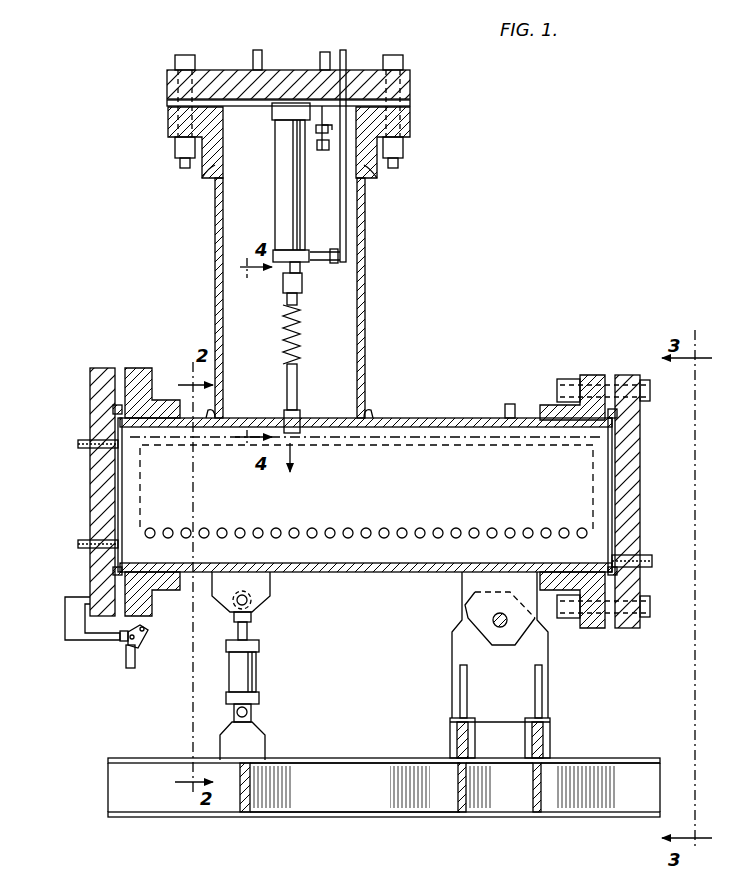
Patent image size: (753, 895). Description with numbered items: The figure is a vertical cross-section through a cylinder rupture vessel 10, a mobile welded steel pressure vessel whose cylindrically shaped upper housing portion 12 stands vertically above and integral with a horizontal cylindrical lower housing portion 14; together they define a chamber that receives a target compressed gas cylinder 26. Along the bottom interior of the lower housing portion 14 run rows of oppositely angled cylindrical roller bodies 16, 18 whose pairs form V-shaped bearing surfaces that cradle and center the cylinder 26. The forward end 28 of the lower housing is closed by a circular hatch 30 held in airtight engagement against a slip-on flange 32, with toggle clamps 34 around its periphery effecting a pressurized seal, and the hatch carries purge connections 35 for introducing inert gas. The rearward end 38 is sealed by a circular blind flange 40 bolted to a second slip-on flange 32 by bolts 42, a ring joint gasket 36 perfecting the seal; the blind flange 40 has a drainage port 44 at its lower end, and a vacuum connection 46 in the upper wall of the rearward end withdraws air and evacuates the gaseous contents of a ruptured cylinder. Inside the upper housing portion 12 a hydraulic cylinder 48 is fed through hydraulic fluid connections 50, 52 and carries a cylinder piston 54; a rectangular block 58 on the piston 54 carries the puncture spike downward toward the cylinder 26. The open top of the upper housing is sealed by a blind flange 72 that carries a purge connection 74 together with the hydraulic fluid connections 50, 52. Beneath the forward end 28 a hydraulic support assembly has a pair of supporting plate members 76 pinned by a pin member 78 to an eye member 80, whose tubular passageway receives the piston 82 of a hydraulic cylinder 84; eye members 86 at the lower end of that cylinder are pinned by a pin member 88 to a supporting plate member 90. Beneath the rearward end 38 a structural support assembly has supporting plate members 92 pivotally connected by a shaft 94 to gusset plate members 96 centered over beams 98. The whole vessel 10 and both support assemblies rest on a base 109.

The cylinder rupture vessel 10 is at (404, 298).
The upper housing portion 12 is at (215, 252).
The lower housing portion 14 is at (426, 418).
The cylindrical roller body 16 is at (242, 527).
The cylindrical roller body 18 is at (270, 565).
The target compressed gas cylinder 26 is at (512, 535).
The forward end 28 is at (120, 496).
The circular hatch 30 is at (90, 386).
The slip-on flange 32 is at (140, 368).
The toggle clamp 34 is at (65, 622).
The purge connection 35 is at (78, 444).
The ring joint gasket 36 is at (113, 409).
The rearward end 38 is at (600, 502).
The circular blind flange 40 is at (640, 458).
The bolt 42 is at (650, 390).
The drainage port 44 is at (648, 562).
The vacuum connection 46 is at (509, 404).
The hydraulic cylinder 48 is at (275, 222).
The hydraulic fluid connection 50 is at (325, 52).
The hydraulic fluid connection 52 is at (346, 56).
The cylinder piston 54 is at (302, 273).
The rectangular block 58 is at (298, 296).
The blind flange 72 is at (284, 70).
The purge connection 74 is at (257, 50).
The supporting plate member 76 is at (262, 580).
The pin member 78 is at (233, 601).
The eye member 80 is at (251, 617).
The piston 82 is at (247, 634).
The hydraulic cylinder 84 is at (259, 675).
The eye member 86 is at (252, 712).
The pin member 88 is at (228, 733).
The supporting plate member 90 is at (265, 745).
The supporting plate member 92 is at (470, 597).
The shaft 94 is at (493, 622).
The gusset plate member 96 is at (458, 682).
The beam 98 is at (548, 744).
The base 109 is at (374, 817).